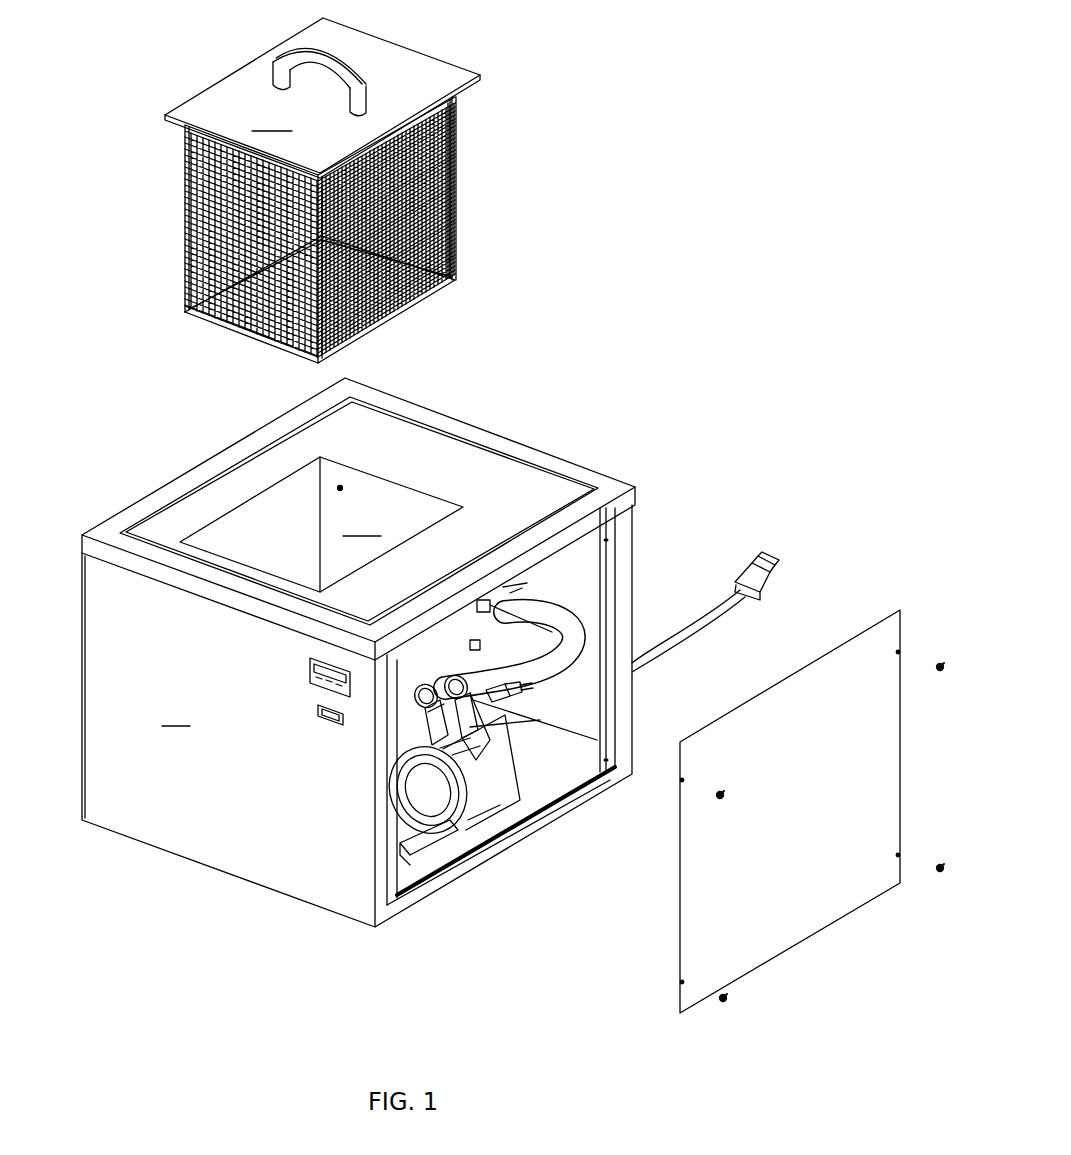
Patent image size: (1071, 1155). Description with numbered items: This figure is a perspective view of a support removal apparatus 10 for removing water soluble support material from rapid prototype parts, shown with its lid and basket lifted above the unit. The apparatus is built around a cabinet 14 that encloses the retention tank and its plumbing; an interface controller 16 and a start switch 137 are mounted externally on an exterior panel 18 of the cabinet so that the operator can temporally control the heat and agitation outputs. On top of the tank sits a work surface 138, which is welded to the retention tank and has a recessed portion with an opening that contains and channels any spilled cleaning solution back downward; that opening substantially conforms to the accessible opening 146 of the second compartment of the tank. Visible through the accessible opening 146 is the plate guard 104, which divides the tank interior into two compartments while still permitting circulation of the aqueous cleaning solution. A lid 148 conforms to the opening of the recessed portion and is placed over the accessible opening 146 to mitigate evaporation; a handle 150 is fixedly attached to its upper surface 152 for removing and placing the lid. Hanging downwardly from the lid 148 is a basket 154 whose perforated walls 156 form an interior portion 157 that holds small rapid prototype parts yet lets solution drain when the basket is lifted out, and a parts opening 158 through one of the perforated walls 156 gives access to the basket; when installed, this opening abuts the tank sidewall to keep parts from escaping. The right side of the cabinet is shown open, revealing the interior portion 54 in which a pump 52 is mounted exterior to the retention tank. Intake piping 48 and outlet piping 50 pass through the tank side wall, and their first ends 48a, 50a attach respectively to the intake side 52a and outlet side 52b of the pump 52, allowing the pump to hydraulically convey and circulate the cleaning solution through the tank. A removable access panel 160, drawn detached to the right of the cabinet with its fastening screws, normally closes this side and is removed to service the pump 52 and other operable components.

The support removal apparatus 10 is at (180, 962).
The cabinet 14 is at (95, 827).
The interface controller 16 is at (310, 679).
The exterior panel 18 is at (139, 687).
The intake piping 48 is at (597, 580).
The first end of intake piping 48a is at (416, 688).
The outlet piping 50 is at (580, 600).
The first end of outlet piping 50a is at (513, 727).
The pump 52 is at (470, 805).
The intake side of pump 52a is at (437, 722).
The outlet side of pump 52b is at (473, 812).
The interior portion of cabinet 54 is at (613, 713).
The plate guard 104 is at (354, 524).
The start switch 137 is at (318, 712).
The work surface 138 is at (497, 473).
The accessible opening 146 is at (375, 480).
The lid 148 is at (165, 117).
The handle 150 is at (347, 62).
The upper surface of lid 152 is at (322, 98).
The basket 154 is at (457, 148).
The perforated walls 156 is at (452, 207).
The interior portion of basket 157 is at (185, 200).
The parts opening 158 is at (185, 268).
The access panel 160 is at (680, 918).